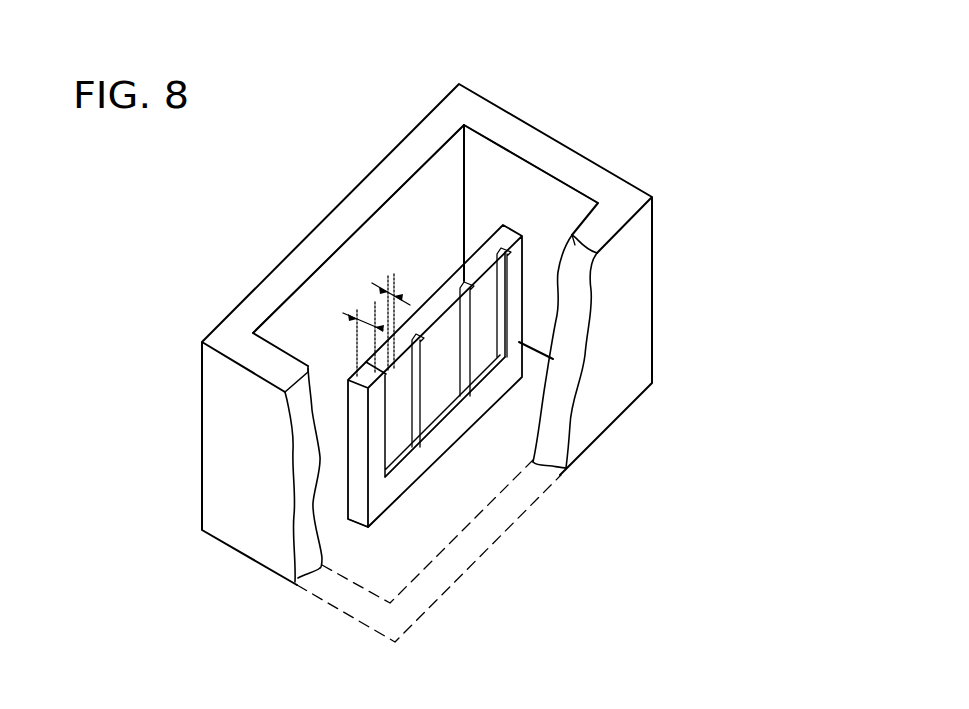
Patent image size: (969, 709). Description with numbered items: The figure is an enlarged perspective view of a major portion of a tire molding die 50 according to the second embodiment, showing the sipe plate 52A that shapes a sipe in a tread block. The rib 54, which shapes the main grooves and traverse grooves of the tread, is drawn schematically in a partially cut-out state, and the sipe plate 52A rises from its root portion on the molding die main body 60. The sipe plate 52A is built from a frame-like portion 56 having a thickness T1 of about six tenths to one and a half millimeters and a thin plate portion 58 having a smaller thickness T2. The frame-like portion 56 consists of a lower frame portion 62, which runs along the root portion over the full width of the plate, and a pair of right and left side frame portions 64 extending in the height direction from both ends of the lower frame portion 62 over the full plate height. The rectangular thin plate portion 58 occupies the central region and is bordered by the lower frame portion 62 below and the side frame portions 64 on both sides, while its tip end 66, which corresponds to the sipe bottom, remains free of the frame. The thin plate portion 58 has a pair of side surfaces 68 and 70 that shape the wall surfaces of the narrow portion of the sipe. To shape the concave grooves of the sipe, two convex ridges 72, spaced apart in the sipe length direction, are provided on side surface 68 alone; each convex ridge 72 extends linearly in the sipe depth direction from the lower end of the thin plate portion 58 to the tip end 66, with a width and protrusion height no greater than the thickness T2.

The tire molding die 50 is at (296, 144).
The sipe plate 52A is at (443, 460).
The rib 54 is at (647, 251).
The frame-like portion 56 is at (372, 447).
The thin plate portion 58 is at (437, 392).
The molding die main body 60 is at (510, 447).
The lower frame portion 62 is at (417, 470).
The side frame portions 64 is at (512, 302).
The tip end 66 is at (500, 265).
The side surface 68 is at (457, 285).
The side surface 70 is at (443, 325).
The convex ridge 72 is at (503, 358).
The thickness of frame-like portion T1 is at (368, 317).
The thickness of thin plate portion T2 is at (390, 290).